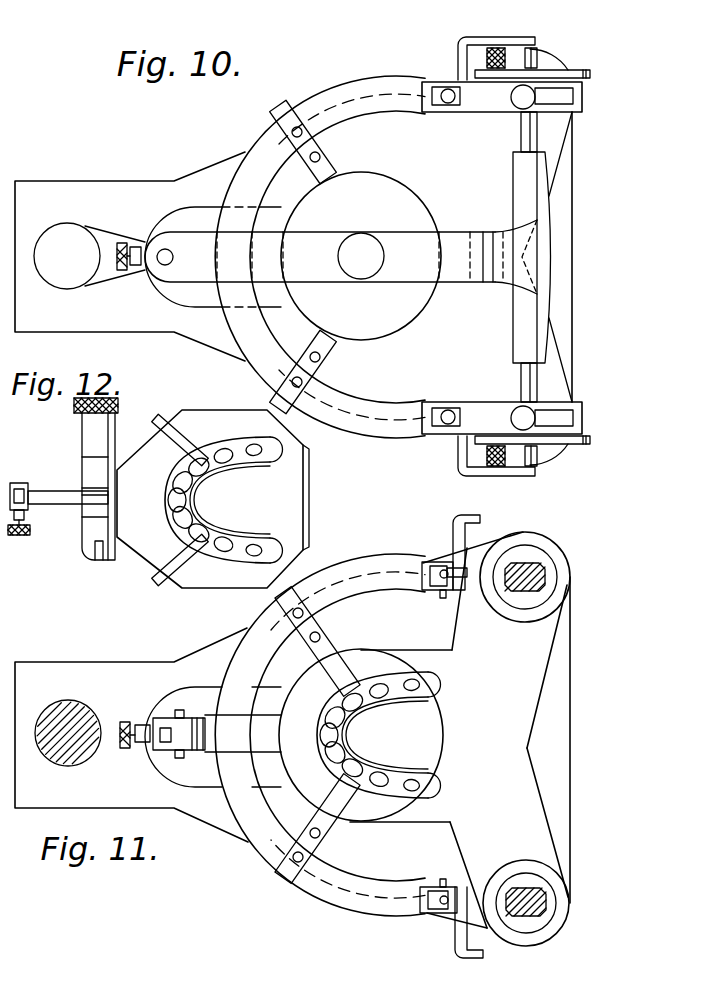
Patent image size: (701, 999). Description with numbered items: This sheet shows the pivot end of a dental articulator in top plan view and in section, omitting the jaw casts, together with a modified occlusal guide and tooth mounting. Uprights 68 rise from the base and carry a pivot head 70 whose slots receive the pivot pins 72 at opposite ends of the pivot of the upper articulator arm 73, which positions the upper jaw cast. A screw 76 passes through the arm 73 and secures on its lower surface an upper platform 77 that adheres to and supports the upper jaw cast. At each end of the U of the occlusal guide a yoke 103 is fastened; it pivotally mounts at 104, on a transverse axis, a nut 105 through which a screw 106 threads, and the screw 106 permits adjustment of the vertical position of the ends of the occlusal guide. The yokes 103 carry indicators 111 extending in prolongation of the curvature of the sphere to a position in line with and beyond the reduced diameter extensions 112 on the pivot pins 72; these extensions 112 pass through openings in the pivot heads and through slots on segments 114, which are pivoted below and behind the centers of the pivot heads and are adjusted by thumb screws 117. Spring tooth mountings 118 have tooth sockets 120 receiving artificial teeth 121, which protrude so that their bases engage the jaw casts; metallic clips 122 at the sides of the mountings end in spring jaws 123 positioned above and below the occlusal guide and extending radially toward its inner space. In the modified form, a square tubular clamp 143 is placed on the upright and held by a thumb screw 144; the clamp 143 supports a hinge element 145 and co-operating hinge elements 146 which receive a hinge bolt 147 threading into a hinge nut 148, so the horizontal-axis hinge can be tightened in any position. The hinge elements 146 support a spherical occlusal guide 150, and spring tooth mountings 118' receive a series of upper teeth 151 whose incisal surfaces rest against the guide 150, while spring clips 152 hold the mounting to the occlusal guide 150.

In FIG. 10, the uprights 68 is at (582, 91).
In FIG. 11, the uprights 68 is at (571, 574).
In FIG. 10, the pivot head 70 is at (577, 104).
In FIG. 10, the pivot pins 72 is at (540, 133).
In FIG. 10, the upper articulator arm 73 is at (461, 234).
In FIG. 10, the screw 76 is at (356, 238).
In FIG. 10, the upper platform 77 is at (361, 256).
In FIG. 10, the indicators 111 is at (511, 477).
In FIG. 10, the reduced diameter extensions 112 is at (535, 56).
In FIG. 10, the segments 114 is at (591, 442).
In FIG. 10, the thumb screws 117 is at (487, 452).
In FIG. 11, the yoke 103 is at (413, 560).
In FIG. 11, the pivot 104 is at (443, 598).
In FIG. 11, the nut 105 is at (464, 583).
In FIG. 11, the screw 106 is at (443, 562).
In FIG. 11, the spring tooth mountings 118 is at (385, 735).
In FIG. 12, the spring tooth mountings 118' is at (224, 469).
In FIG. 11, the tooth sockets 120 is at (407, 668).
In FIG. 11, the artificial teeth 121 is at (424, 682).
In FIG. 11, the metallic clips 122 is at (323, 647).
In FIG. 11, the spring jaws 123 is at (292, 582).
In FIG. 12, the square tubular clamp 143 is at (18, 488).
In FIG. 12, the thumb screw 144 is at (18, 536).
In FIG. 12, the hinge element 145 is at (105, 508).
In FIG. 12, the hinge elements 146 is at (100, 470).
In FIG. 12, the hinge bolt 147 is at (98, 545).
In FIG. 12, the hinge nut 148 is at (105, 432).
In FIG. 12, the spherical occlusal guide 150 is at (213, 499).
In FIG. 12, the upper teeth 151 is at (257, 547).
In FIG. 12, the spring clips 152 is at (180, 428).